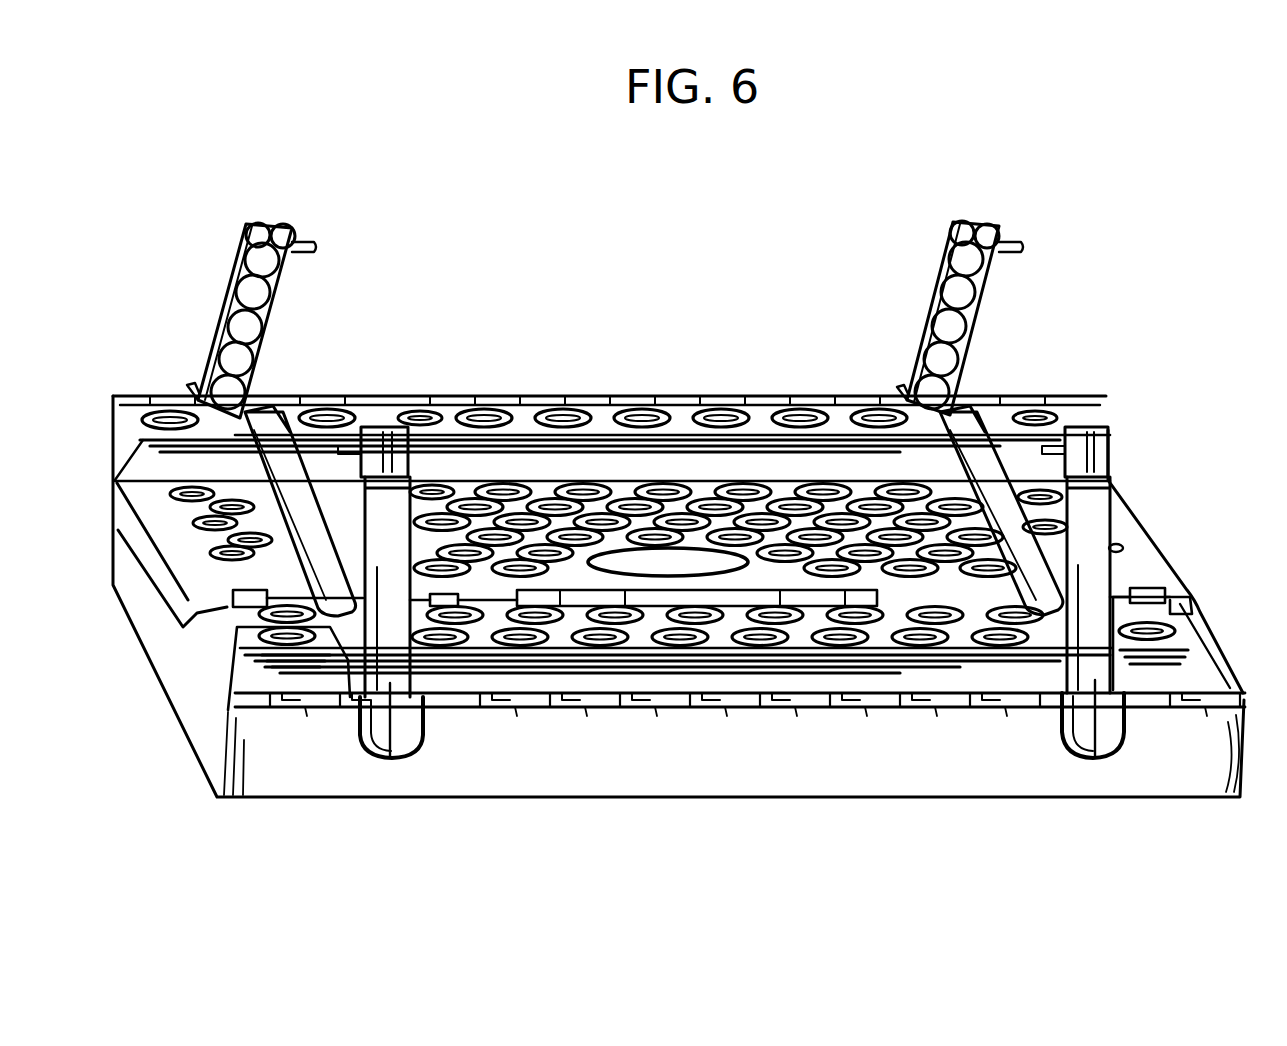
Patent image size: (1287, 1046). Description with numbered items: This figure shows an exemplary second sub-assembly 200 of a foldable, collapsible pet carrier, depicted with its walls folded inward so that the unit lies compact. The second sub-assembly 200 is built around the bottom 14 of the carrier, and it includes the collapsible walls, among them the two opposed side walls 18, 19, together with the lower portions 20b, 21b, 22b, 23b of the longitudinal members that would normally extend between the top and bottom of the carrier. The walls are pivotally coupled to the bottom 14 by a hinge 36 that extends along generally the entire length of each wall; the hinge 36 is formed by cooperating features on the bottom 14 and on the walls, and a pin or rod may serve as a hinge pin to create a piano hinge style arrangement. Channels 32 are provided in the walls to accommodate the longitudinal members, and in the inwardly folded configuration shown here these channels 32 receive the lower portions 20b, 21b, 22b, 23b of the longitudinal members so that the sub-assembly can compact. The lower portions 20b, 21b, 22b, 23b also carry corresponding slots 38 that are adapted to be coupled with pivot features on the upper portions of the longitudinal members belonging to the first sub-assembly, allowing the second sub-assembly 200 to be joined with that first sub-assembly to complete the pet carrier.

The second sub-assembly 200 is at (469, 232).
The bottom 14 is at (733, 798).
The side wall 18 is at (510, 697).
The side wall 19 is at (604, 410).
The lower portion of longitudinal member 20b is at (388, 760).
The lower portion of longitudinal member 21b is at (1093, 745).
The lower portion of longitudinal member 22b is at (280, 277).
The lower portion of longitudinal member 23b is at (934, 280).
The channel 32 is at (272, 512).
The hinge 36 is at (910, 706).
The slot 38 is at (1090, 427).